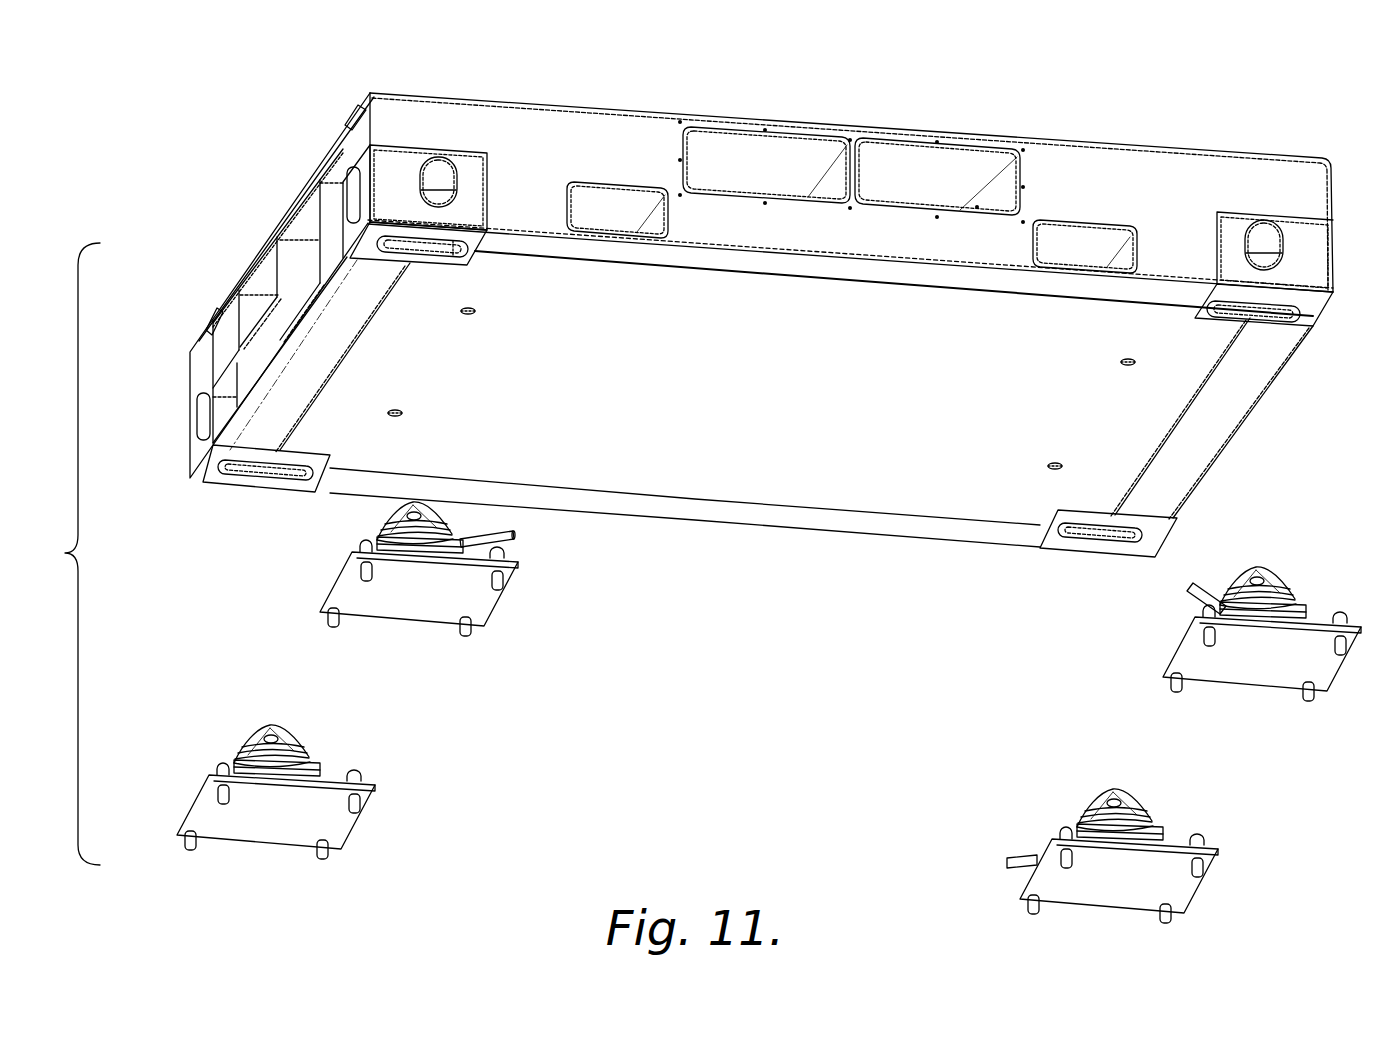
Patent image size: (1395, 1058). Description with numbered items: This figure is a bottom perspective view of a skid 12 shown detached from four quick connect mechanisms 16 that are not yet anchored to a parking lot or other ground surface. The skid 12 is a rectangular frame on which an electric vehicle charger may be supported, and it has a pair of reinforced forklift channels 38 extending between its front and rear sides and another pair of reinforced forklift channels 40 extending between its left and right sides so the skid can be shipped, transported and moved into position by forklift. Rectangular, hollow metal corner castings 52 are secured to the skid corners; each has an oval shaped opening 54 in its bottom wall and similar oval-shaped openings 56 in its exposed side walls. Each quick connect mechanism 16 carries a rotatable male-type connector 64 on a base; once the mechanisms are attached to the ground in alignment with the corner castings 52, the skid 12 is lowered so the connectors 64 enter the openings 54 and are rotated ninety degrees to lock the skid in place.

The skid 12 is at (940, 117).
The quick connect mechanism 16 is at (340, 760).
The reinforced forklift channel 38 is at (615, 213).
The reinforced forklift channel 40 is at (340, 233).
The corner casting 52 is at (478, 178).
The oval shaped opening 54 is at (433, 247).
The oval-shaped opening 56 is at (437, 185).
The rotatable male-type connector 64 is at (1267, 580).